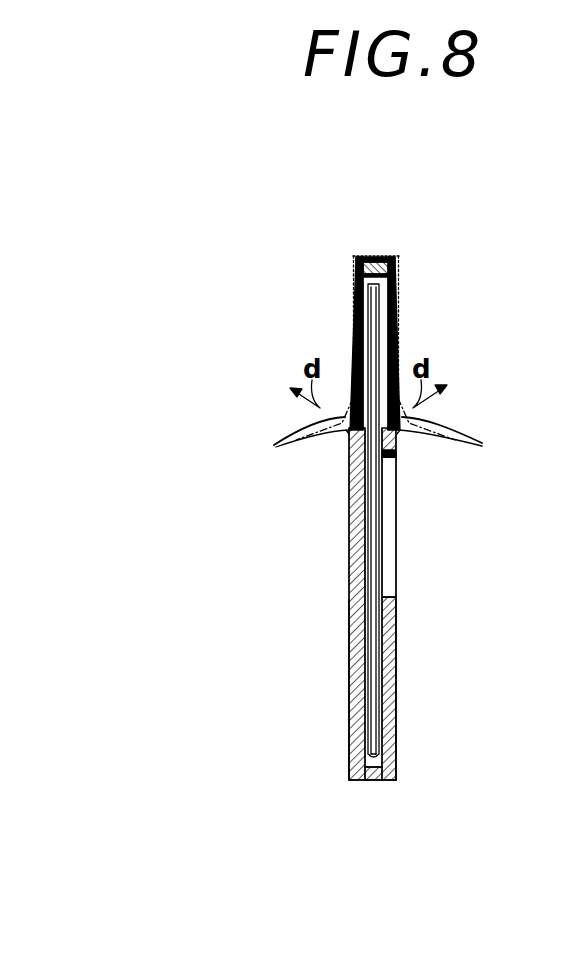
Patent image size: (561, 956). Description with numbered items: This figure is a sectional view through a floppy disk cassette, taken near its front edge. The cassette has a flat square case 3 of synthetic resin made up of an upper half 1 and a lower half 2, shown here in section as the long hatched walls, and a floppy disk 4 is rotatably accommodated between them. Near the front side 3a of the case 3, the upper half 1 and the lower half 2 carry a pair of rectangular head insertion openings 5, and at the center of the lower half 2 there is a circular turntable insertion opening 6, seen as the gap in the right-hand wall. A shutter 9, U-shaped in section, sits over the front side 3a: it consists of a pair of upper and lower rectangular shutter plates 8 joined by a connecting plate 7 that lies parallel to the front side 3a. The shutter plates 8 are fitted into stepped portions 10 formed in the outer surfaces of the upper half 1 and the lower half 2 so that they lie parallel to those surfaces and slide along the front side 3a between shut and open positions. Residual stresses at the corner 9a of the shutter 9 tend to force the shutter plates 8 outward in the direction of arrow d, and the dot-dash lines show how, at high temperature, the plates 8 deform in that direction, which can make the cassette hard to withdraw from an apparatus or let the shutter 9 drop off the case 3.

The upper half 1 is at (356, 712).
The lower half 2 is at (392, 712).
The case 3 is at (346, 745).
The front side 3a is at (382, 257).
The floppy disk 4 is at (374, 518).
The head insertion openings 5 is at (386, 332).
The turntable insertion opening 6 is at (388, 573).
The connecting plate 7 is at (367, 258).
The shutter plates 8 is at (377, 440).
The shutter 9 is at (345, 277).
The corner 9a is at (355, 257).
The stepped portions 10 is at (346, 432).